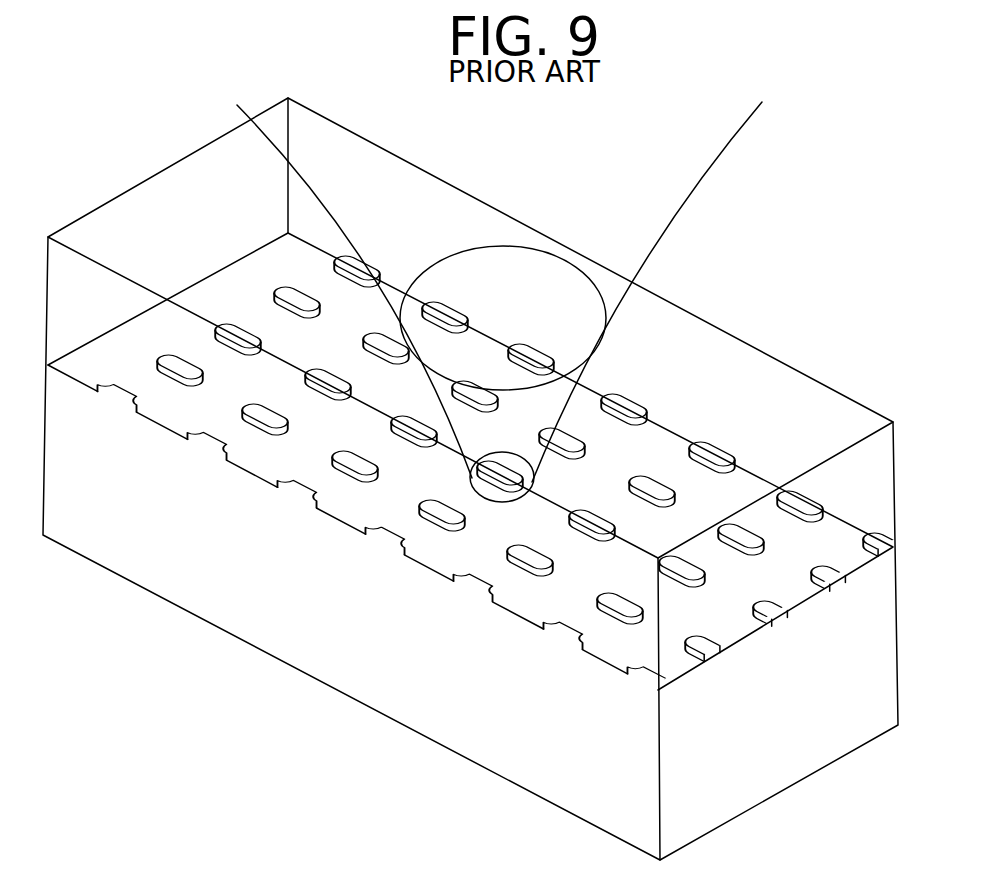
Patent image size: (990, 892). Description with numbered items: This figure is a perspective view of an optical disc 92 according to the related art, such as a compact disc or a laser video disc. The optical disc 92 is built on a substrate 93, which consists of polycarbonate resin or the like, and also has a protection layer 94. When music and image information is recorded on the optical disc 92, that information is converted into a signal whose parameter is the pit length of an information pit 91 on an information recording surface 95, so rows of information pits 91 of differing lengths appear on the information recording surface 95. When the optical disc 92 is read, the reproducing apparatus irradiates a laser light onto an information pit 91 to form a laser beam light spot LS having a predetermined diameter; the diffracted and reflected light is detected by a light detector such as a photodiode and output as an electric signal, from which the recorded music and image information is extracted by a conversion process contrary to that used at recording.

The information pit 91 is at (648, 477).
The optical disc 92 is at (760, 295).
The substrate 93 is at (797, 383).
The protection layer 94 is at (877, 673).
The information recording surface 95 is at (828, 540).
The laser beam light spot LS is at (500, 507).